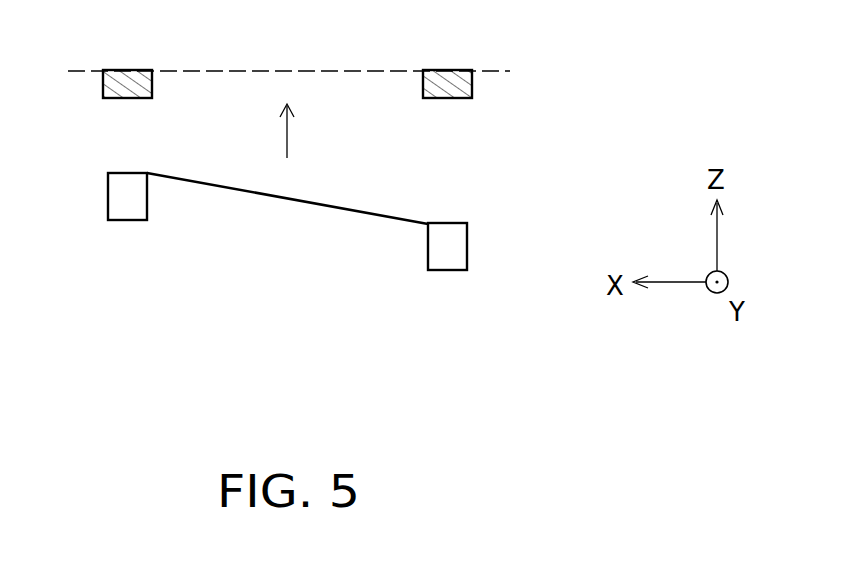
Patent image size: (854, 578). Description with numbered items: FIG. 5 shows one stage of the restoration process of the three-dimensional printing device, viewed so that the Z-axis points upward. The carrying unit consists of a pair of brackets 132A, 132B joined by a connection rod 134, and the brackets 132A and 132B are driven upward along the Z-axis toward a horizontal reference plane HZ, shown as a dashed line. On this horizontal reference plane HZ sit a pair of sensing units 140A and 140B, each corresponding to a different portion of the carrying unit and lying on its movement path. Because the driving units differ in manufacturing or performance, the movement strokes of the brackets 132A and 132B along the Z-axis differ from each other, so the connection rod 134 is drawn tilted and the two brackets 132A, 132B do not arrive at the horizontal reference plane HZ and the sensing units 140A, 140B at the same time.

The horizontal reference plane HZ is at (311, 76).
The sensing unit 140B is at (128, 75).
The sensing unit 140A is at (448, 75).
The bracket 132B is at (127, 207).
The bracket 132A is at (448, 256).
The connection rod 134 is at (286, 204).